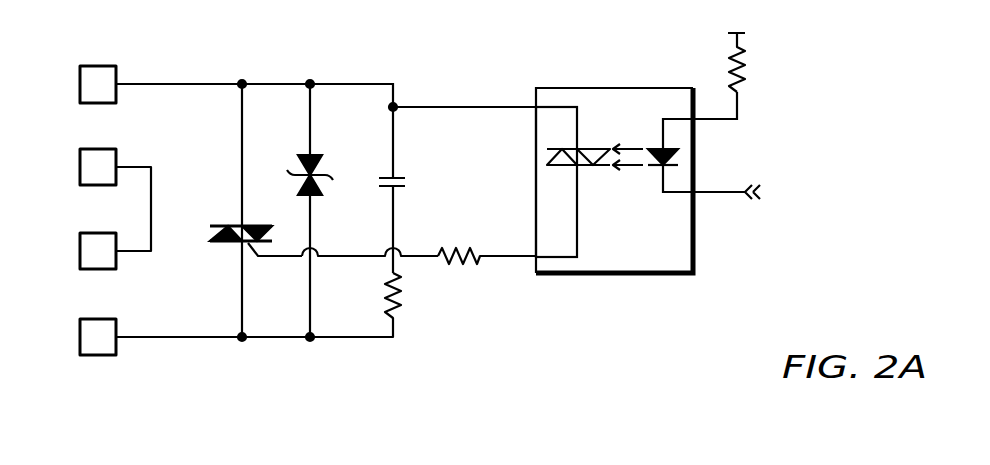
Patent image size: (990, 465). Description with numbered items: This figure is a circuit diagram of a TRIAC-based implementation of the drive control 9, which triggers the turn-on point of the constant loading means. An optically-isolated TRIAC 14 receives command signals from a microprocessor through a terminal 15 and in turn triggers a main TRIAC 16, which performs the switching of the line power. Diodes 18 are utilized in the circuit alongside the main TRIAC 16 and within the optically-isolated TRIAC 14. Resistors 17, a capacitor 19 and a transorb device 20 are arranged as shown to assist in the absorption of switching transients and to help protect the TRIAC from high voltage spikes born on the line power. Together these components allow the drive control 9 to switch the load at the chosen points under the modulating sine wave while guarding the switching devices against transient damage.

The drive control 9 is at (299, 58).
The optically-isolated TRIAC 14 is at (612, 276).
The terminal 15 is at (730, 193).
The main TRIAC 16 is at (233, 226).
The resistors 17 is at (398, 300).
The diodes 18 is at (310, 154).
The capacitors 19 is at (400, 176).
The transorb device 20 is at (592, 168).